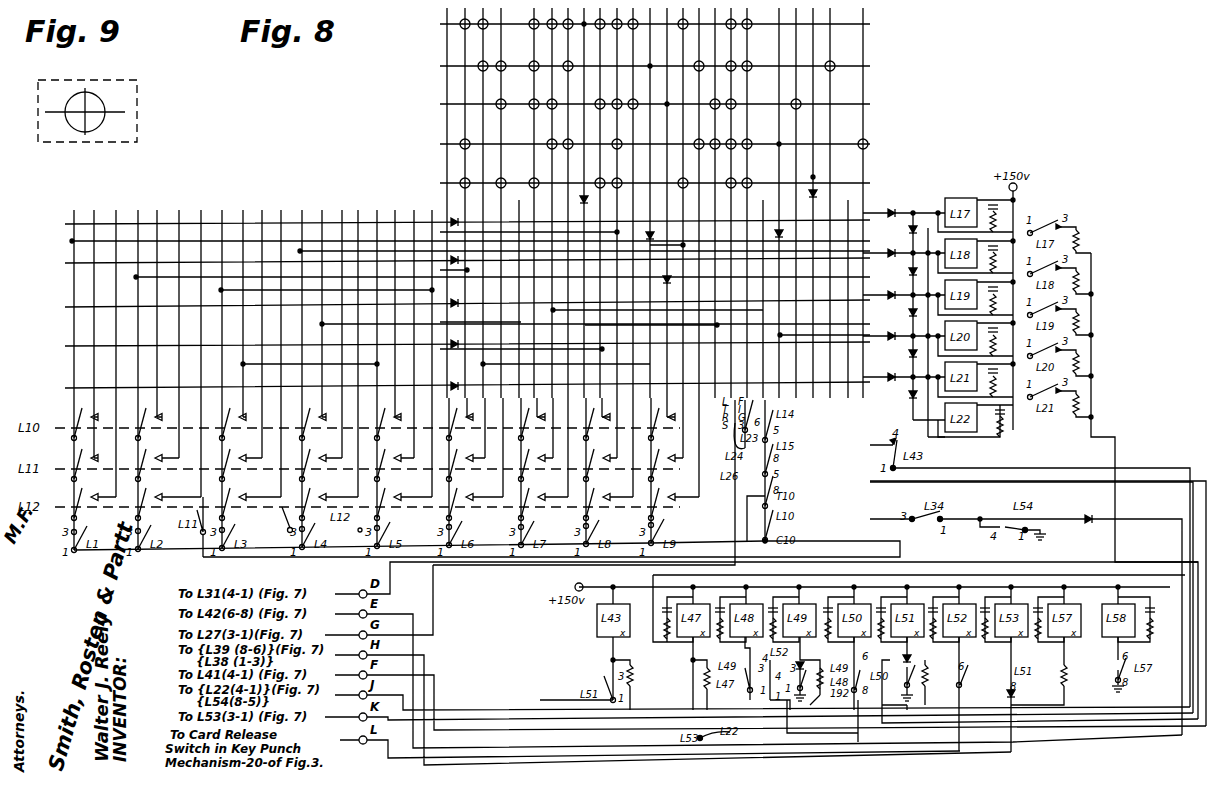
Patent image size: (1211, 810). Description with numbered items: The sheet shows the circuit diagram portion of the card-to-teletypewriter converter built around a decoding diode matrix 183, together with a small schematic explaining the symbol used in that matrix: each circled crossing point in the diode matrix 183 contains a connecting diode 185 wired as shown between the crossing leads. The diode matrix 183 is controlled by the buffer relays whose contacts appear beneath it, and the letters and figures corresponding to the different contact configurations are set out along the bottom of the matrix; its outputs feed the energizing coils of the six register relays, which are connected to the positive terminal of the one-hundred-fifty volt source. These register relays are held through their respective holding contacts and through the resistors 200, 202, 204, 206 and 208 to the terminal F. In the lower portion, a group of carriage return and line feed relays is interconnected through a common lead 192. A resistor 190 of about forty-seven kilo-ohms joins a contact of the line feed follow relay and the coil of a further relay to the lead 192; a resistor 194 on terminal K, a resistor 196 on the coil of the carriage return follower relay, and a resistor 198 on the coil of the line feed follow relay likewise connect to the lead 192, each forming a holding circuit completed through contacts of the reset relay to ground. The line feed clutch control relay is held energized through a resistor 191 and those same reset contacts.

In FIG. 8, the diode matrix 183 is at (832, 118).
In FIG. 9, the connecting diode 185 is at (92, 103).
In FIG. 8, the resistor 190 is at (634, 694).
In FIG. 8, the resistor 191 is at (1068, 675).
In FIG. 8, the lead 192 is at (1025, 705).
In FIG. 8, the resistor 194 is at (705, 676).
In FIG. 8, the resistor 196 is at (824, 668).
In FIG. 8, the resistor 198 is at (927, 660).
In FIG. 8, the resistor 200 is at (1083, 240).
In FIG. 8, the resistor 202 is at (1083, 281).
In FIG. 8, the resistor 204 is at (1083, 322).
In FIG. 8, the resistor 206 is at (1083, 363).
In FIG. 8, the resistor 208 is at (1083, 404).